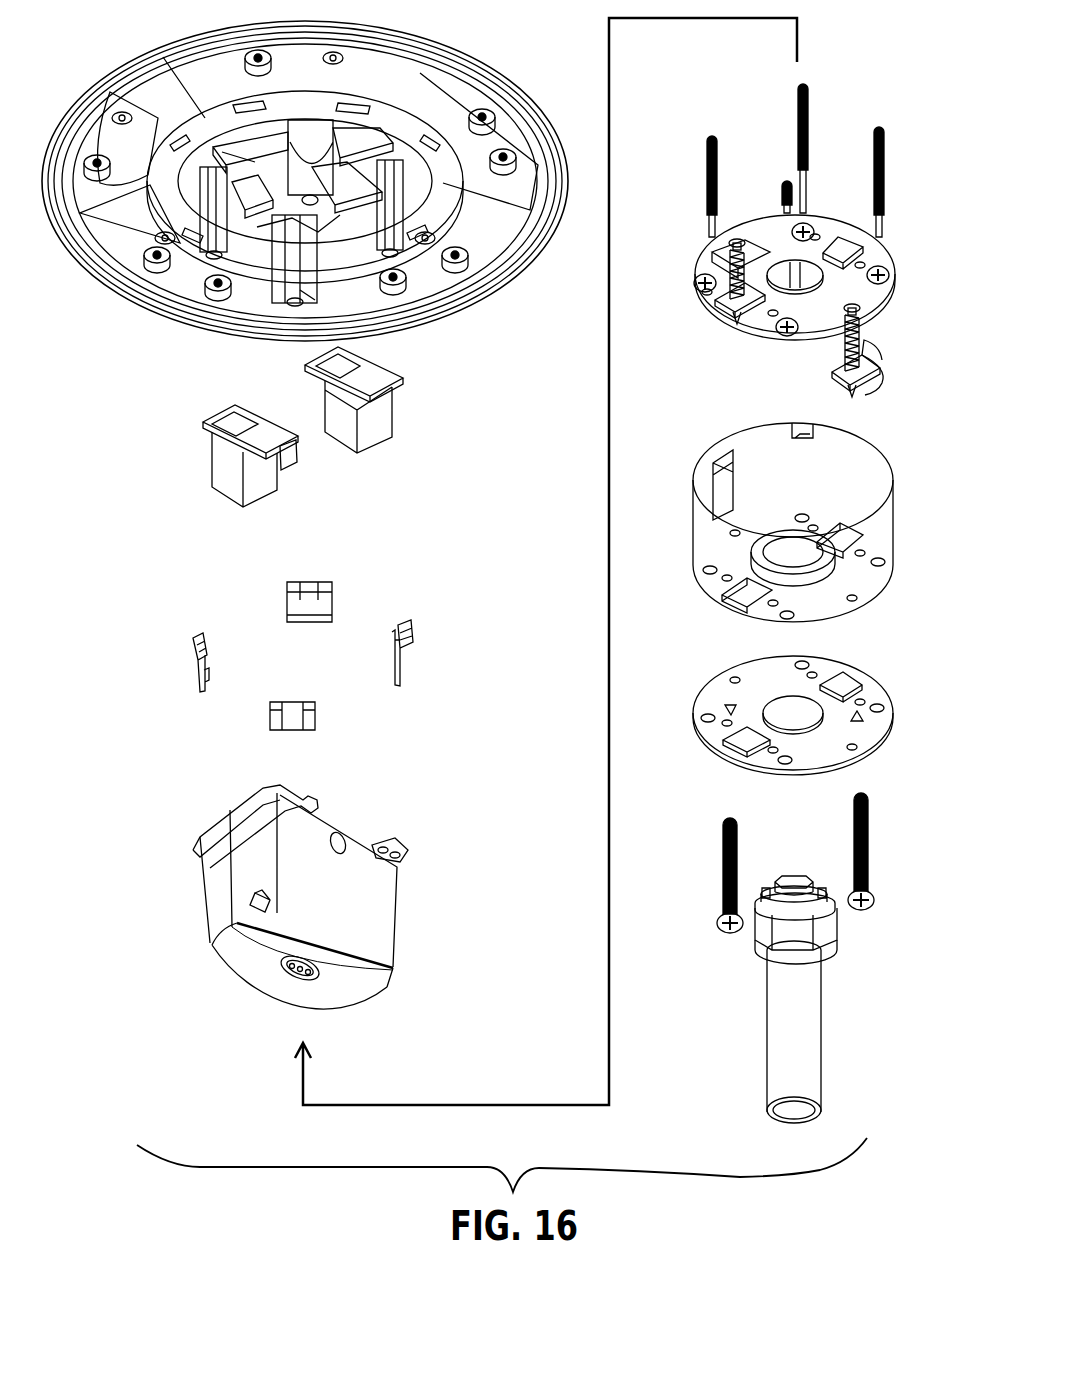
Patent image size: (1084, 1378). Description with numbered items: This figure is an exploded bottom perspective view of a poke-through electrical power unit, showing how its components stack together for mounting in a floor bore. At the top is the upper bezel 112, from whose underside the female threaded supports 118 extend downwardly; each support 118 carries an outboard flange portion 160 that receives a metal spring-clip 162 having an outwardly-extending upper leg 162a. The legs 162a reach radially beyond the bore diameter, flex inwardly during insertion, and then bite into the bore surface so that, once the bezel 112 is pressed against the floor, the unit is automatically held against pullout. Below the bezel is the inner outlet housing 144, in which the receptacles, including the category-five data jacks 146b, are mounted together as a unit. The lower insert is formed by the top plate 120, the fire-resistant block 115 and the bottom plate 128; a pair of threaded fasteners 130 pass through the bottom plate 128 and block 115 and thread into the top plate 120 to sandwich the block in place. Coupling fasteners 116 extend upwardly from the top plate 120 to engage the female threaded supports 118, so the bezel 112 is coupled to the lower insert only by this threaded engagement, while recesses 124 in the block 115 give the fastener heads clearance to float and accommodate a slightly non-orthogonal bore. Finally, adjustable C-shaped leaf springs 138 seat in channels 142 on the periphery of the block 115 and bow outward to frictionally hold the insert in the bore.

The upper bezel 112 is at (440, 45).
The fire-resistant block 115 is at (870, 450).
The fastener 116 is at (798, 137).
The female threaded support 118 is at (313, 132).
The top plate 120 is at (893, 265).
The recess 124 is at (807, 413).
The bottom plate 128 is at (870, 672).
The threaded fastener 130 is at (723, 863).
The leaf spring 138 is at (701, 305).
The channel 142 is at (705, 493).
The inner outlet housing 144 is at (387, 933).
The data jack 146b is at (247, 405).
The outboard flange portion 160 is at (288, 158).
The spring-clip 162 is at (217, 709).
The upper leg 162a is at (315, 572).